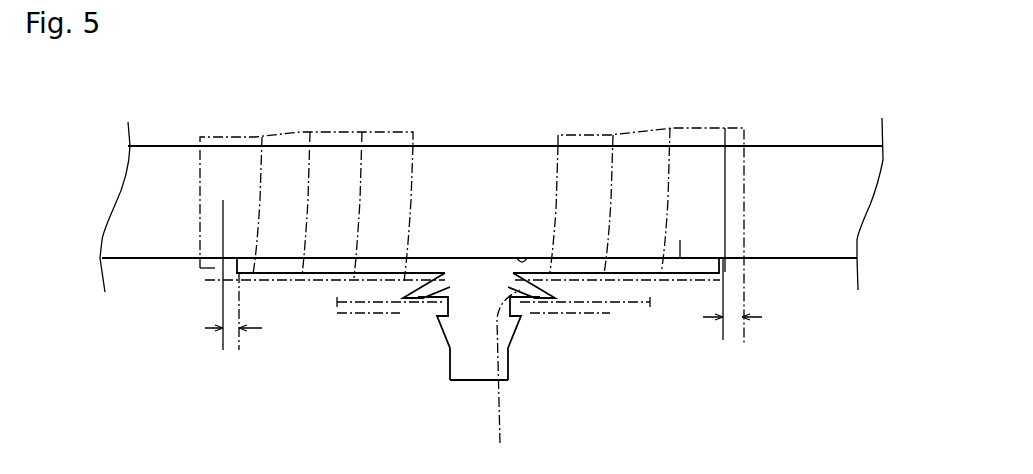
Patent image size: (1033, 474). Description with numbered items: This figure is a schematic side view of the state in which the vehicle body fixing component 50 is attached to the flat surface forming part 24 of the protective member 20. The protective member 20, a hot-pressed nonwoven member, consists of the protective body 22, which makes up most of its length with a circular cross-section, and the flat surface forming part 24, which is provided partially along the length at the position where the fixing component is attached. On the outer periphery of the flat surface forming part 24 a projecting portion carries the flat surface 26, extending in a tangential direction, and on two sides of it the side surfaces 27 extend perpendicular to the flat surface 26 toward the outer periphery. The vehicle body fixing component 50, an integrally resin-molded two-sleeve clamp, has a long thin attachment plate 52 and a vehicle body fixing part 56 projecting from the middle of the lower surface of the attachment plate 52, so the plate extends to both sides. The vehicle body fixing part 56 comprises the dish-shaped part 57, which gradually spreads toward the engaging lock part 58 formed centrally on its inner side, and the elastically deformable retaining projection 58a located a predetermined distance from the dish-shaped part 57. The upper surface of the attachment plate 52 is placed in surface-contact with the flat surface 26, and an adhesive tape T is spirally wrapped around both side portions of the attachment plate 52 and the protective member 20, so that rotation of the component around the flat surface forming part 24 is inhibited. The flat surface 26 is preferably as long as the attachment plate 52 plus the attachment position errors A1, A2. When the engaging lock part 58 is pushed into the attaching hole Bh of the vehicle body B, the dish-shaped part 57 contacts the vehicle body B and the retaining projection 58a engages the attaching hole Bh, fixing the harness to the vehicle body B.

The protective member 20 is at (783, 143).
The protective body 22 is at (156, 152).
The flat surface forming part 24 is at (468, 152).
The flat surface 26 is at (533, 257).
The side surfaces 27 is at (680, 240).
The vehicle body fixing component 50 is at (457, 354).
The attachment plate 52 is at (295, 272).
The vehicle body fixing part 56 is at (468, 383).
The dish-shaped part 57 is at (397, 293).
The engaging lock part 58 is at (452, 363).
The retaining projection 58a is at (437, 318).
The attachment position error A1 is at (228, 355).
The attachment position error A2 is at (731, 345).
The vehicle body B is at (615, 312).
The attaching hole Bh is at (504, 380).
The adhesive tape T is at (283, 127).